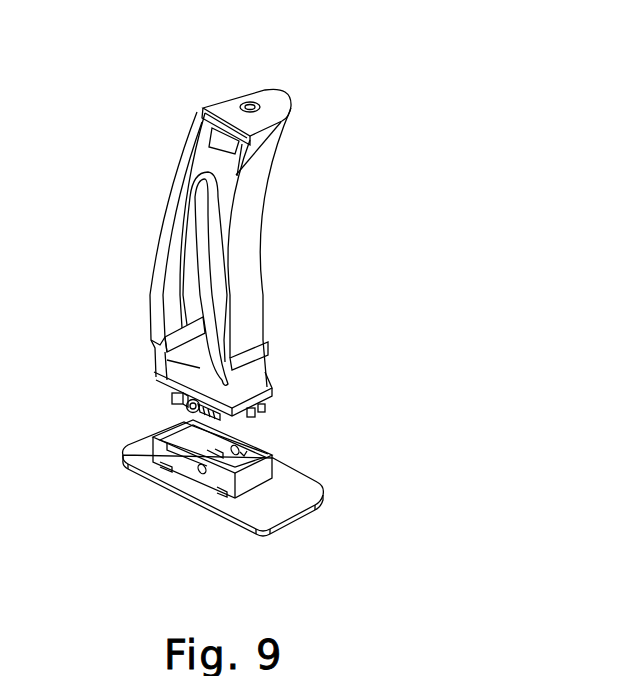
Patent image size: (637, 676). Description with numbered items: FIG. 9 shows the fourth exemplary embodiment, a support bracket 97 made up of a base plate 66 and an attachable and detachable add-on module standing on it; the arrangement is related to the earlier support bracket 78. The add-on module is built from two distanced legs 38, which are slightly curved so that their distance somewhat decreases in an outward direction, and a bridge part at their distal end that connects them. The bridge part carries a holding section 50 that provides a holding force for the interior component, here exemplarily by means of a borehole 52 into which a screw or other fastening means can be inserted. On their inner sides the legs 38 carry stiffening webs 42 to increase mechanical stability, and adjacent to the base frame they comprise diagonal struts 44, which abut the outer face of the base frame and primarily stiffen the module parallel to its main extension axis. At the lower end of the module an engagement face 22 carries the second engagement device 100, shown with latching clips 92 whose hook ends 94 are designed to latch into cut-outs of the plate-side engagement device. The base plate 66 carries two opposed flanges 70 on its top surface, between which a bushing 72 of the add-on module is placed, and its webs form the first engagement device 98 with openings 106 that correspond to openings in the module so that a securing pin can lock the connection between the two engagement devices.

The support bracket 78 is at (348, 60).
The holding section 50 is at (273, 98).
The borehole 52 is at (244, 102).
The legs 38 is at (166, 227).
The stiffening webs 42 is at (205, 165).
The support bracket 97 is at (290, 265).
The diagonal struts 44 is at (178, 362).
The second engagement device 100 is at (298, 380).
The latching clips 92 is at (178, 395).
The hook ends 94 is at (189, 410).
The engagement face 22 is at (277, 550).
The base plate 66 is at (312, 465).
The first engagement device 98 is at (278, 496).
The flanges 70 is at (250, 448).
The bushing 72 is at (166, 455).
The openings 106 is at (202, 476).